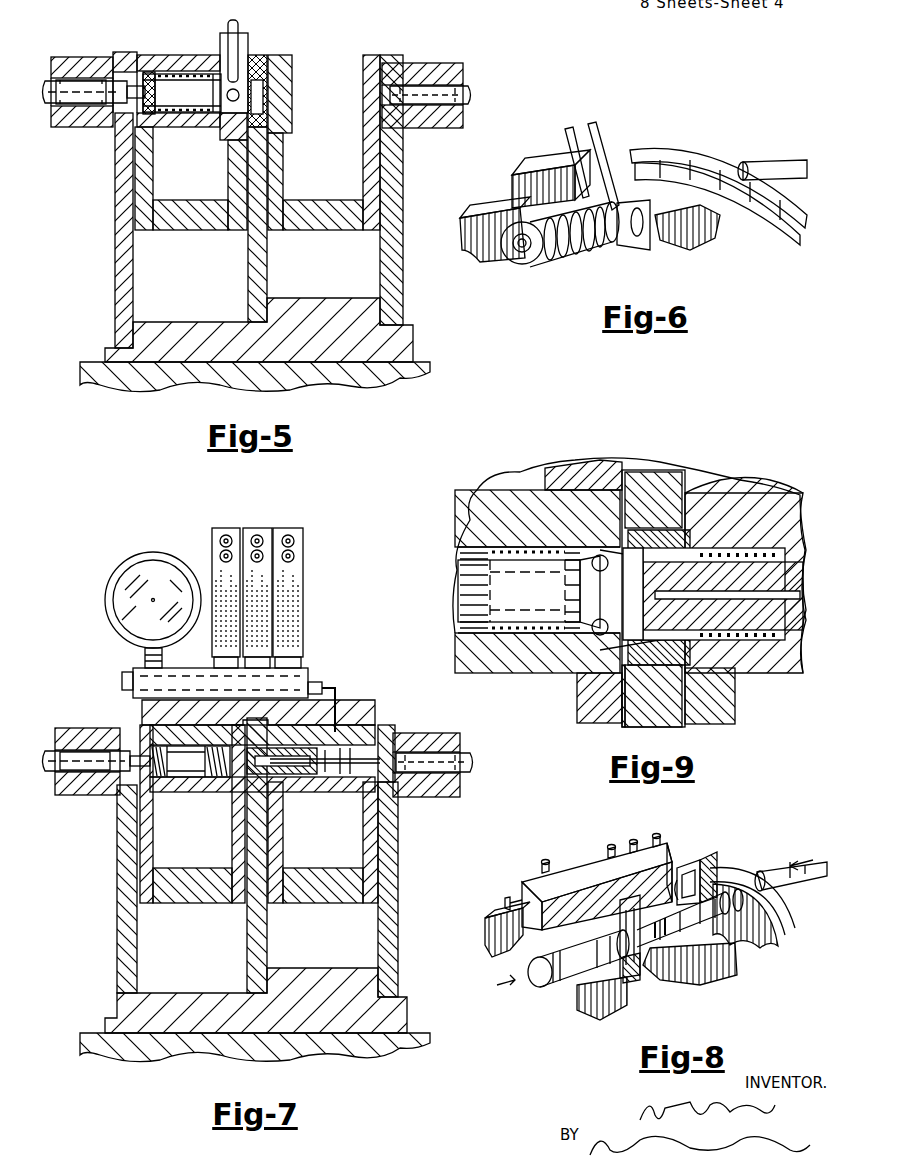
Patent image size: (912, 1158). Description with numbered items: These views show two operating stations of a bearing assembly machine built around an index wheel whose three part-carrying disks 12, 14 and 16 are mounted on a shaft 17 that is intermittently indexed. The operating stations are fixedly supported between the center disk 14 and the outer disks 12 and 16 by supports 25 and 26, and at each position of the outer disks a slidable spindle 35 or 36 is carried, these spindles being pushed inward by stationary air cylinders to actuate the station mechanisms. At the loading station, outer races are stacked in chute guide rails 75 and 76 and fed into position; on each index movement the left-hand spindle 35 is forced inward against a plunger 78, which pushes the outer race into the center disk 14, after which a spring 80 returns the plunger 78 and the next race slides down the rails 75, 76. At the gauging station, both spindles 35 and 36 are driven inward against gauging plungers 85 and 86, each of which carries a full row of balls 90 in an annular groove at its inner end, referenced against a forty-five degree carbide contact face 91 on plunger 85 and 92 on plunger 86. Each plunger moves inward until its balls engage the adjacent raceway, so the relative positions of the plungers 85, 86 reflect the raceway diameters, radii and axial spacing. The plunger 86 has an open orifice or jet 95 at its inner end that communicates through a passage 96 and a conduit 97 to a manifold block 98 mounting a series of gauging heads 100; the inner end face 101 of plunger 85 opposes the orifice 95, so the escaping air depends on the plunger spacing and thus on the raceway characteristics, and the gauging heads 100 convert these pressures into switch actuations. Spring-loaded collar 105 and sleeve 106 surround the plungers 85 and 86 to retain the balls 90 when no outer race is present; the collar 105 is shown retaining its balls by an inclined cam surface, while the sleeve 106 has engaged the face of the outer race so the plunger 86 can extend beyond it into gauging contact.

In FIG. 5, the part-carrying disk 12 is at (115, 268).
In FIG. 6, the part-carrying disk 12 is at (470, 250).
In FIG. 7, the part-carrying disk 12 is at (117, 928).
In FIG. 8, the part-carrying disk 12 is at (490, 940).
In FIG. 5, the center disk 14 is at (267, 268).
In FIG. 6, the center disk 14 is at (720, 238).
In FIG. 9, the center disk 14 is at (650, 715).
In FIG. 7, the center disk 14 is at (247, 928).
In FIG. 8, the center disk 14 is at (720, 975).
In FIG. 5, the part-carrying disk 16 is at (403, 192).
In FIG. 6, the part-carrying disk 16 is at (690, 162).
In FIG. 7, the part-carrying disk 16 is at (386, 930).
In FIG. 8, the part-carrying disk 16 is at (790, 918).
In FIG. 5, the shaft 17 is at (148, 380).
In FIG. 7, the shaft 17 is at (165, 1050).
In FIG. 5, the support 25 is at (153, 172).
In FIG. 7, the support 25 is at (153, 840).
In FIG. 5, the support 26 is at (287, 172).
In FIG. 7, the support 26 is at (283, 840).
In FIG. 5, the spindle 35 is at (90, 75).
In FIG. 7, the spindle 35 is at (65, 748).
In FIG. 5, the spindle 36 is at (425, 82).
In FIG. 7, the spindle 36 is at (470, 766).
In FIG. 6, the chute guide rail 75 is at (566, 132).
In FIG. 5, the chute guide rail 76 is at (240, 30).
In FIG. 6, the chute guide rail 76 is at (603, 134).
In FIG. 5, the plunger 78 is at (186, 72).
In FIG. 6, the plunger 78 is at (520, 265).
In FIG. 5, the spring 80 is at (185, 125).
In FIG. 6, the spring 80 is at (580, 262).
In FIG. 9, the gauging plunger 85 is at (460, 580).
In FIG. 7, the gauging plunger 85 is at (195, 780).
In FIG. 8, the gauging plunger 85 is at (555, 985).
In FIG. 9, the gauging plunger 86 is at (795, 565).
In FIG. 7, the gauging plunger 86 is at (310, 780).
In FIG. 8, the gauging plunger 86 is at (735, 922).
In FIG. 9, the balls 90 is at (685, 520).
In FIG. 9, the contact face 91 is at (565, 673).
In FIG. 9, the contact face 92 is at (740, 675).
In FIG. 9, the orifice 95 is at (648, 596).
In FIG. 8, the orifice 95 is at (652, 965).
In FIG. 9, the passage 96 is at (795, 598).
In FIG. 7, the passage 96 is at (330, 785).
In FIG. 7, the conduit 97 is at (340, 686).
In FIG. 8, the conduit 97 is at (700, 853).
In FIG. 7, the manifold block 98 is at (315, 668).
In FIG. 8, the manifold block 98 is at (588, 882).
In FIG. 7, the gauging heads 100 is at (267, 521).
In FIG. 9, the inner end face 101 is at (618, 594).
In FIG. 8, the inner end face 101 is at (642, 980).
In FIG. 9, the collar 105 is at (535, 490).
In FIG. 9, the sleeve 106 is at (770, 500).